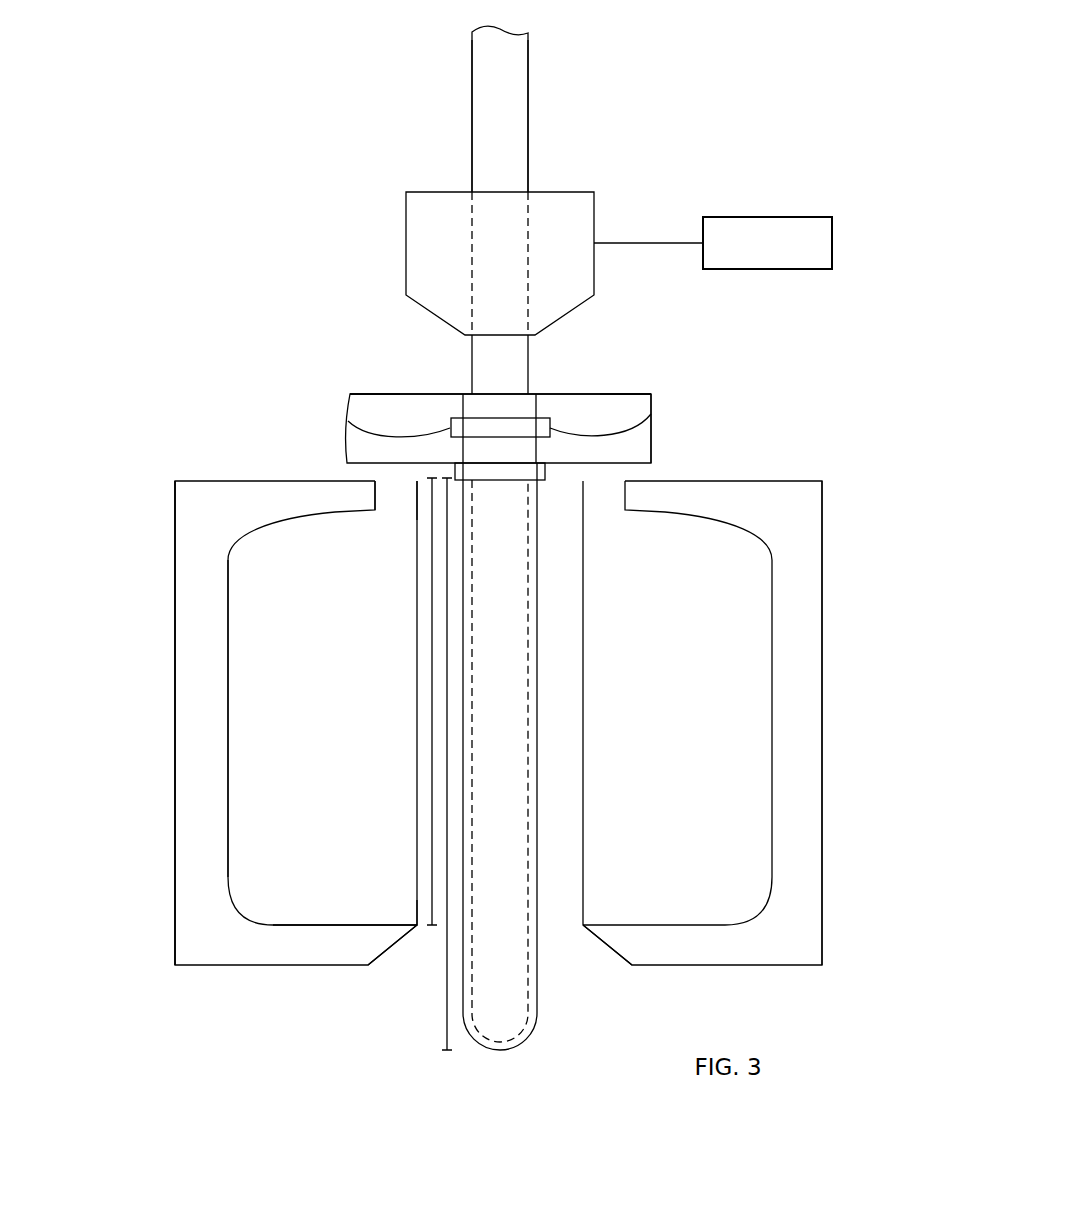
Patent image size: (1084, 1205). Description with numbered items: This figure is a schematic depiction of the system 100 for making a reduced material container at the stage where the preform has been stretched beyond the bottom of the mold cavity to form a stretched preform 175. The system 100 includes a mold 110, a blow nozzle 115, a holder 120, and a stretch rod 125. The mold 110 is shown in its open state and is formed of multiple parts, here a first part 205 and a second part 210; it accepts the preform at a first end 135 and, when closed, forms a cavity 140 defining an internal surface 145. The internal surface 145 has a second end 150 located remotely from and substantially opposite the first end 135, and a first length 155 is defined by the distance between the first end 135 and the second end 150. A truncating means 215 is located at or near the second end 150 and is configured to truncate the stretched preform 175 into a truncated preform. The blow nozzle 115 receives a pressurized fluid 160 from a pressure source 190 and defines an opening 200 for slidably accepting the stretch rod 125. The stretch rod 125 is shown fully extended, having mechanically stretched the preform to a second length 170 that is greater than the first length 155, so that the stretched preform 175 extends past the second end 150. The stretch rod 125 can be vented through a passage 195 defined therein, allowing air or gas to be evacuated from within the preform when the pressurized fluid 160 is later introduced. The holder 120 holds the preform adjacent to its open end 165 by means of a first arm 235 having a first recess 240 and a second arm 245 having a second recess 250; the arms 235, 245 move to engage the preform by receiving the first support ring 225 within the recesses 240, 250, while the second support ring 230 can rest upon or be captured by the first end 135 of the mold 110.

The system 100 is at (252, 74).
The mold 110 is at (175, 612).
The blow nozzle 115 is at (406, 243).
The holder 120 is at (392, 394).
The stretch rod 125 is at (530, 118).
The first end 135 is at (384, 481).
The cavity 140 is at (253, 712).
The internal surface 145 is at (228, 757).
The second end 150 is at (417, 925).
The first length 155 is at (432, 665).
The pressurized fluid 160 is at (782, 255).
The open end 165 is at (536, 394).
The second length 170 is at (447, 695).
The stretched preform 175 is at (537, 720).
The pressure source 190 is at (766, 217).
The passage 195 is at (510, 68).
The opening 200 is at (530, 190).
The first part 205 is at (175, 657).
The second part 210 is at (822, 657).
The truncating means 215 is at (417, 927).
The first support ring 225 is at (488, 425).
The second support ring 230 is at (547, 470).
The first arm 235 is at (358, 394).
The first recess 240 is at (348, 421).
The second arm 245 is at (644, 394).
The second recess 250 is at (651, 414).